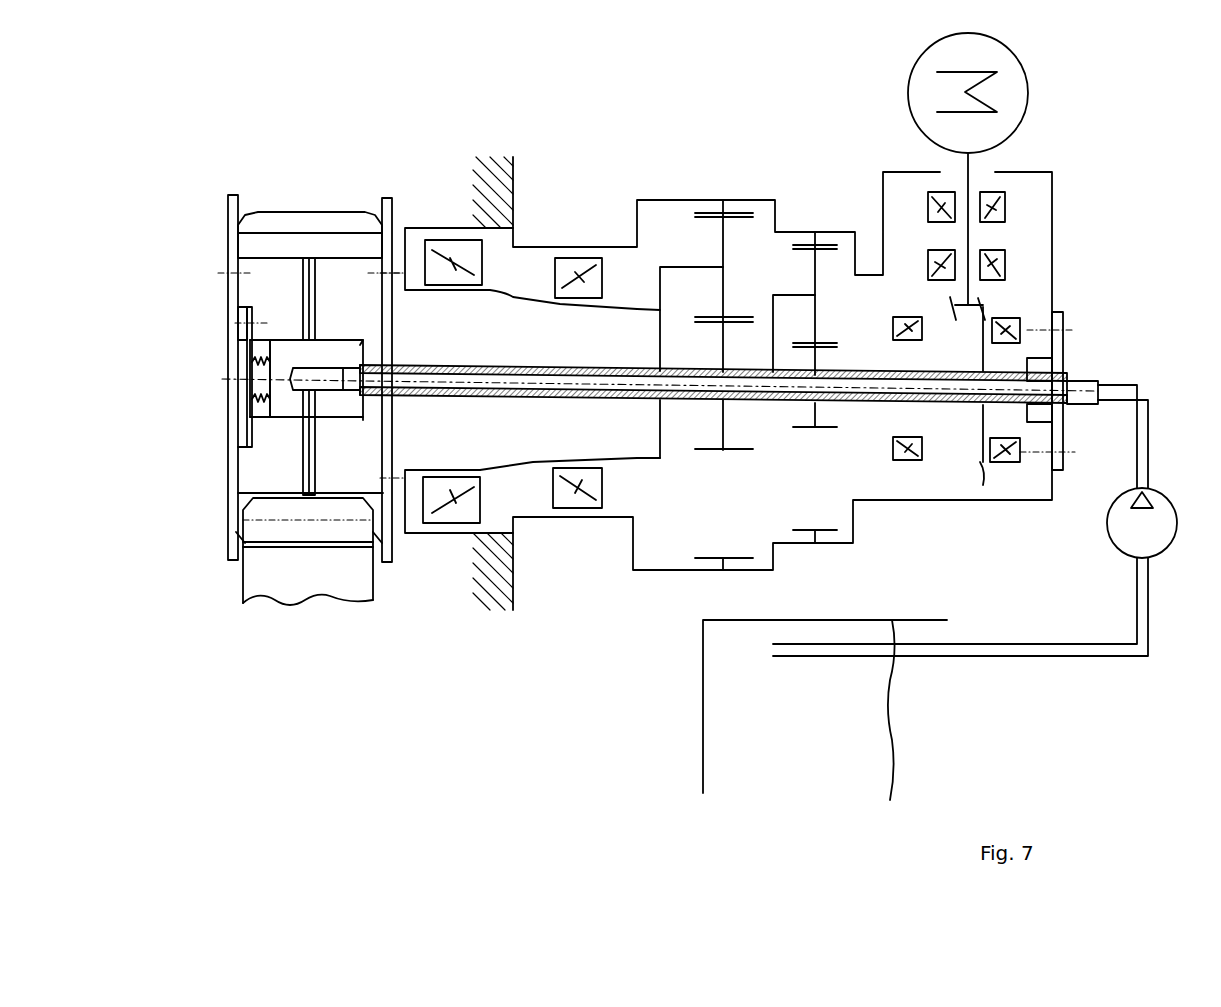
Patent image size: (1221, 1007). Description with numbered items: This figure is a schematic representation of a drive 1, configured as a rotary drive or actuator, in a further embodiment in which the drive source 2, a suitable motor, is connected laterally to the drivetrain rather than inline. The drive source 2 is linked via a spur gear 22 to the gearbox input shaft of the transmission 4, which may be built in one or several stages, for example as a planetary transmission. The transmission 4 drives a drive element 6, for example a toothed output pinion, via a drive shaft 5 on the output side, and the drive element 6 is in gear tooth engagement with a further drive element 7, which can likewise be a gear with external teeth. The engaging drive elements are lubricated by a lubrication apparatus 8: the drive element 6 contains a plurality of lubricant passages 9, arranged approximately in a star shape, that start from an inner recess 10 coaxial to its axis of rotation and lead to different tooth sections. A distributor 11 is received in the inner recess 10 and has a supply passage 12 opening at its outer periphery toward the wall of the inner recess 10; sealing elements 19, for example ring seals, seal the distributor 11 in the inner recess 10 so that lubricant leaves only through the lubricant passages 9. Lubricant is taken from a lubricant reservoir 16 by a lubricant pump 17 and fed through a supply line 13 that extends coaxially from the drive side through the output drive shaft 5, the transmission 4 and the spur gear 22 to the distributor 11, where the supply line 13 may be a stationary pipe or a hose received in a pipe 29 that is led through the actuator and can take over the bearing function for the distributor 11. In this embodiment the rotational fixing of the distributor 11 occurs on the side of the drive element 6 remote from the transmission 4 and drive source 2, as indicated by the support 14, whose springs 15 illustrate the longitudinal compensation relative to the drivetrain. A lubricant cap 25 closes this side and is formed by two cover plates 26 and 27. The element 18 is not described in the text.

The drive 1 is at (1112, 233).
The drive source 2 is at (1036, 86).
The transmission 4 is at (767, 229).
The drive shaft 5 is at (510, 302).
The drive element 6 is at (335, 245).
The further drive element 7 is at (320, 597).
The lubrication apparatus 8 is at (371, 423).
The lubricant passages 9 is at (316, 300).
The inner recess 10 is at (258, 342).
The distributor 11 is at (347, 347).
The supply passage 12 is at (317, 407).
The supply line 13 is at (512, 375).
The support 14 is at (238, 428).
The springs 15 is at (250, 403).
The lubricant reservoir 16 is at (840, 629).
The lubricant pump 17 is at (1168, 533).
The spacer 18 is at (280, 338).
The sealing elements 19 is at (363, 352).
The spur gear 22 is at (985, 312).
The lubricant cap 25 is at (232, 206).
The cover plate 26 is at (228, 220).
The cover plate 27 is at (393, 216).
The pipe 29 is at (478, 368).